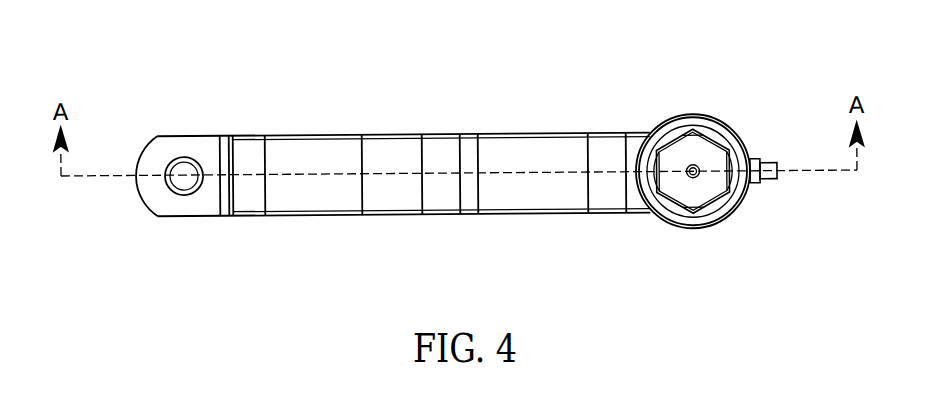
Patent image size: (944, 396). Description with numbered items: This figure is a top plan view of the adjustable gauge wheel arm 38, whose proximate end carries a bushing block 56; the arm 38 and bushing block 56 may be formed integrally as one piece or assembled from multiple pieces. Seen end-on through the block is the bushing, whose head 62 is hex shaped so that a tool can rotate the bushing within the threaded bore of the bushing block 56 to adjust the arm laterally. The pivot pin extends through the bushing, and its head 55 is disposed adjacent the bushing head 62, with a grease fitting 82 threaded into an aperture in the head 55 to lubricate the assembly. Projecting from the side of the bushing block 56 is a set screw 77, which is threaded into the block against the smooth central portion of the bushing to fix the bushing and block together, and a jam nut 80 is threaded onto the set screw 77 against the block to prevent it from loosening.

The gauge wheel arm 38 is at (431, 224).
The head 55 is at (680, 148).
The bushing block 56 is at (731, 215).
The head 62 is at (691, 214).
The set screw 77 is at (773, 164).
The jam nut 80 is at (757, 159).
The grease fitting 82 is at (692, 166).